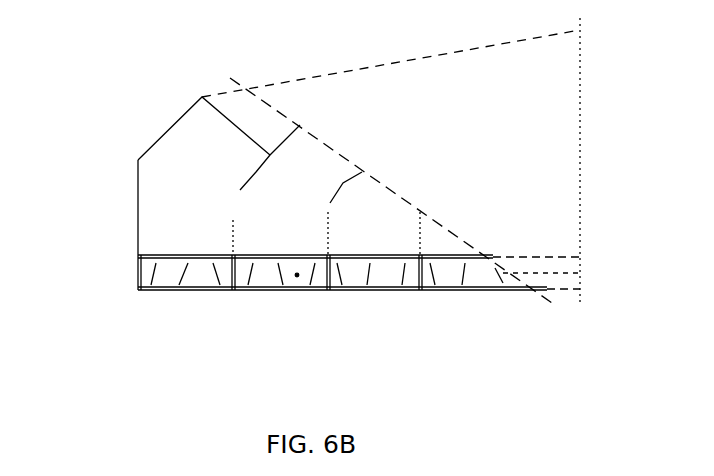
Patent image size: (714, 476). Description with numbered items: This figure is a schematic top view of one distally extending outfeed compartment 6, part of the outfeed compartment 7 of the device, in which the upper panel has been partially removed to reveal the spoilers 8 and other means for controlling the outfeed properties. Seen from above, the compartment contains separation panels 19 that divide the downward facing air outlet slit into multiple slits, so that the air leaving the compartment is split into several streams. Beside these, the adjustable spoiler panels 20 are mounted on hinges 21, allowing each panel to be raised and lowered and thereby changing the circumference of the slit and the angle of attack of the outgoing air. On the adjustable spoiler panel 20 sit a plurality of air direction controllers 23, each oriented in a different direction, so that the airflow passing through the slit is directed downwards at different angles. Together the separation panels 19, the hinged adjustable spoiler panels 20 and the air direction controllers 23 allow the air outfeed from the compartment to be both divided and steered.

The spoilers 8 is at (202, 97).
The distally extending outfeed compartment 6 is at (180, 186).
The hinges 21 is at (136, 257).
The separation panel 19 is at (233, 291).
The adjustable spoiler panel 20 is at (297, 276).
The air direction controller 23 is at (359, 291).
The outfeed compartment 7 is at (514, 275).